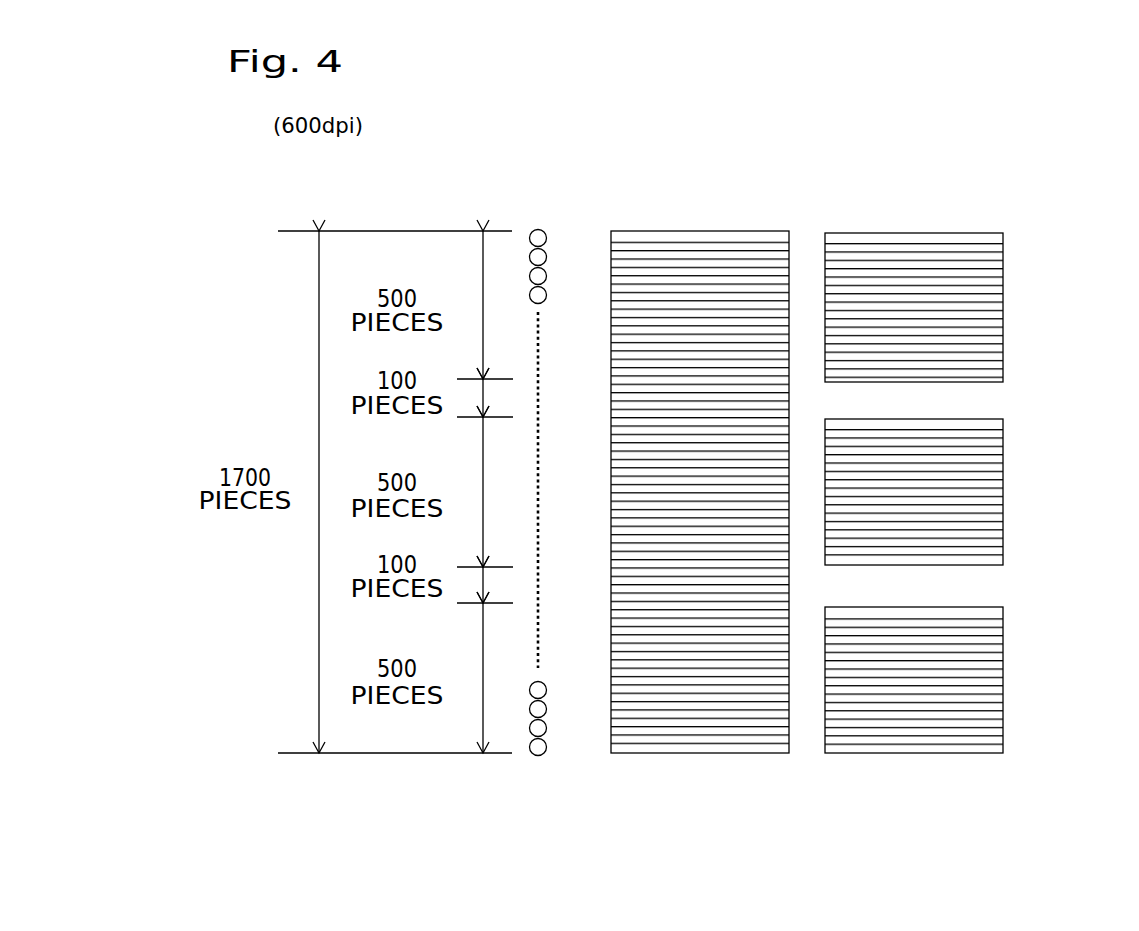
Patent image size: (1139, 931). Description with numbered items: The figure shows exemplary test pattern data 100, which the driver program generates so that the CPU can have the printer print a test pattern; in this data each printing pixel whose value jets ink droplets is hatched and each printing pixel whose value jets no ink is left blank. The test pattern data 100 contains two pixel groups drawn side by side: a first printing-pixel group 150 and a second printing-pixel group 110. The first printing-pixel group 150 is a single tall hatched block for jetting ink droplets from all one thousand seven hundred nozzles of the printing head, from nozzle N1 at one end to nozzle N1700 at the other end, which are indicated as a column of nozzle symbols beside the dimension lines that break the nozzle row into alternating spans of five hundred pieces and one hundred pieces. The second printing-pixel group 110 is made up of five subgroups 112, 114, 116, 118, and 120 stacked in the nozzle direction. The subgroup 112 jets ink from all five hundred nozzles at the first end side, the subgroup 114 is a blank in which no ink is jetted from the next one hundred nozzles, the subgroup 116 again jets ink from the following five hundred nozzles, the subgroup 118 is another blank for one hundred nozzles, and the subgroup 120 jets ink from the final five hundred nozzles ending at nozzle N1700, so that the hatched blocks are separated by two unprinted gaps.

The test pattern data 100 is at (1040, 195).
The second printing-pixel group 110 is at (822, 222).
The subgroup 112 is at (1013, 288).
The subgroup 114 is at (1010, 398).
The subgroup 116 is at (1013, 507).
The subgroup 118 is at (1010, 590).
The subgroup 120 is at (1015, 670).
The first printing-pixel group 150 is at (612, 222).
The nozzle N1 is at (537, 229).
The nozzle N1700 is at (538, 756).